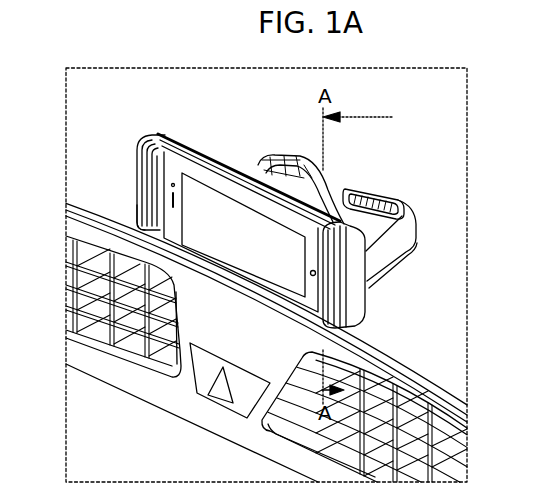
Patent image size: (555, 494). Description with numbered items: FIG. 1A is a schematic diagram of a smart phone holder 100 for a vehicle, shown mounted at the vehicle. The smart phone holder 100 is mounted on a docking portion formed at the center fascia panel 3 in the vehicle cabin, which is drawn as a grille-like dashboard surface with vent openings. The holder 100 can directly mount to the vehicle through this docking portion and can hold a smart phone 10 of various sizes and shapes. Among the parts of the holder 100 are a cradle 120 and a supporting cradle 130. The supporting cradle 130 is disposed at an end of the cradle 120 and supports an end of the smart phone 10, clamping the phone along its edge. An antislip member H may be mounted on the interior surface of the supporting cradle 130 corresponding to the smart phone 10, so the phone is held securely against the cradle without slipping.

The center fascia panel 3 is at (420, 376).
The smart phone 10 is at (185, 135).
The smart phone holder 100 is at (380, 305).
The cradle 120 is at (372, 192).
The supporting cradle 130 is at (135, 172).
The antislip member H is at (137, 192).